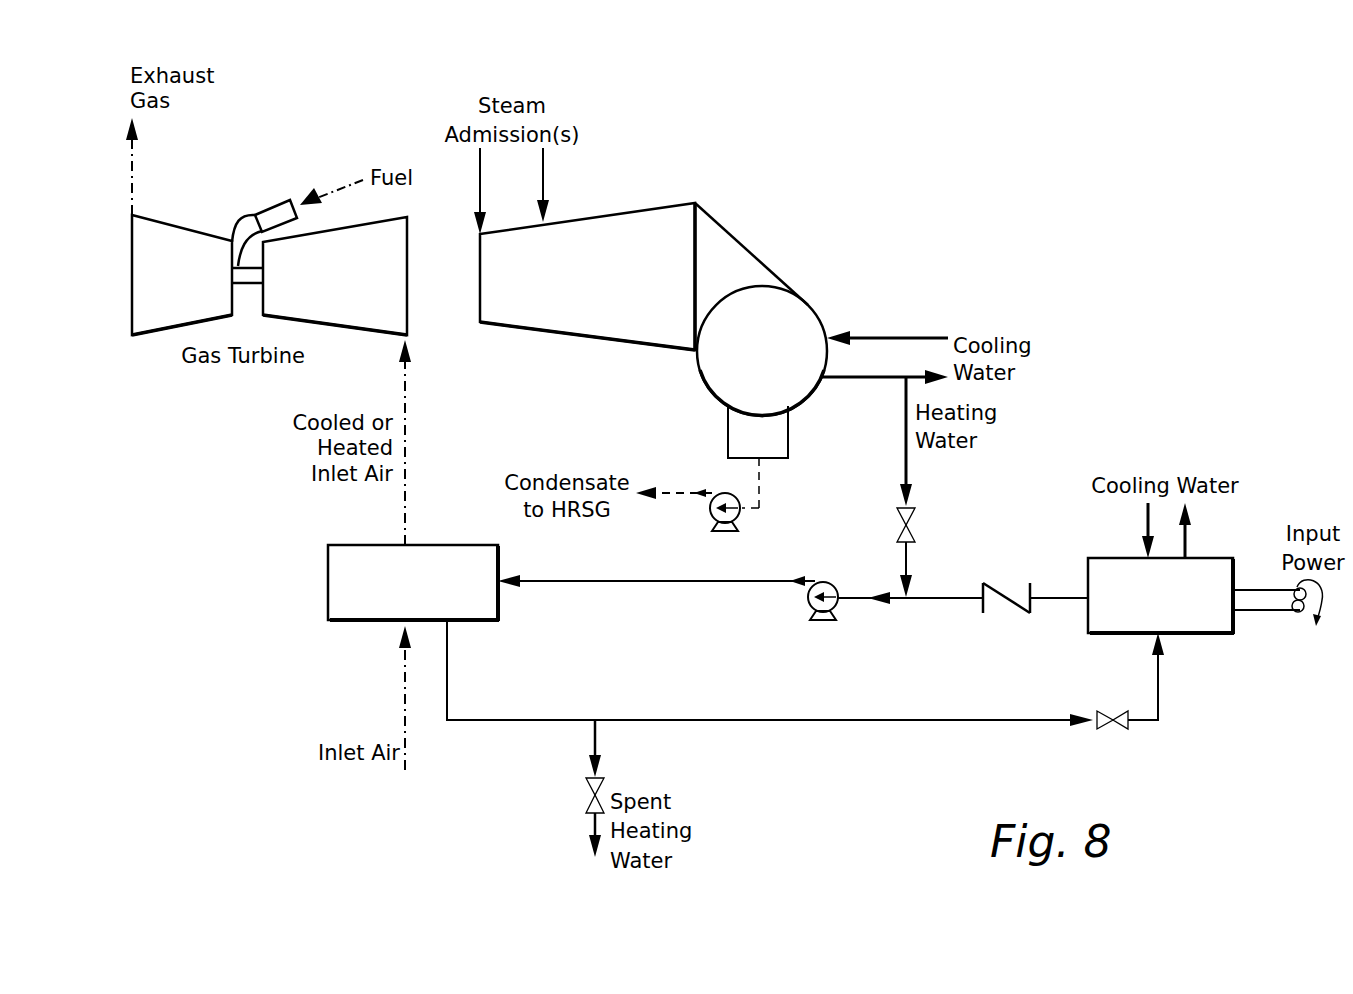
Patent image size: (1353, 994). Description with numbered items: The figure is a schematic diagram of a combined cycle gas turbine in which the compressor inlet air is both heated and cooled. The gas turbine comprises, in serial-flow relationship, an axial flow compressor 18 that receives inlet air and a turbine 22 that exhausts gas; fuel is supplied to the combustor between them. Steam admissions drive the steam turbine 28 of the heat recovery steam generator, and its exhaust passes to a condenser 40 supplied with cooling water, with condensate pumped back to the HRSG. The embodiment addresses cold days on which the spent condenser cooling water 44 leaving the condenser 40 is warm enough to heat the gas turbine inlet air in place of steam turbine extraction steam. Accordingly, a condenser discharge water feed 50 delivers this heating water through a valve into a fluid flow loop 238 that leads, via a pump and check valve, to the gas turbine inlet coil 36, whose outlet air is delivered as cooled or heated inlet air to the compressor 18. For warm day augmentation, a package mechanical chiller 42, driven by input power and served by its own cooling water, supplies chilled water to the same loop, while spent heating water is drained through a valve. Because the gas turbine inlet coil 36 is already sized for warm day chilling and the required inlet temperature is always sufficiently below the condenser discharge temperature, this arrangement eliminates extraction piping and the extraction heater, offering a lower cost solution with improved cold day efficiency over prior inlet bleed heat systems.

The turbine 22 is at (171, 232).
The compressor 18 is at (408, 250).
The steam turbine 28 is at (622, 217).
The condenser 40 is at (803, 321).
The spent condenser cooling water 44 is at (848, 380).
The condenser discharge water feed 50 is at (908, 465).
The gas turbine inlet coil 36 is at (435, 543).
The mechanical chiller 42 is at (1200, 633).
The fluid flow loop 238 is at (830, 742).